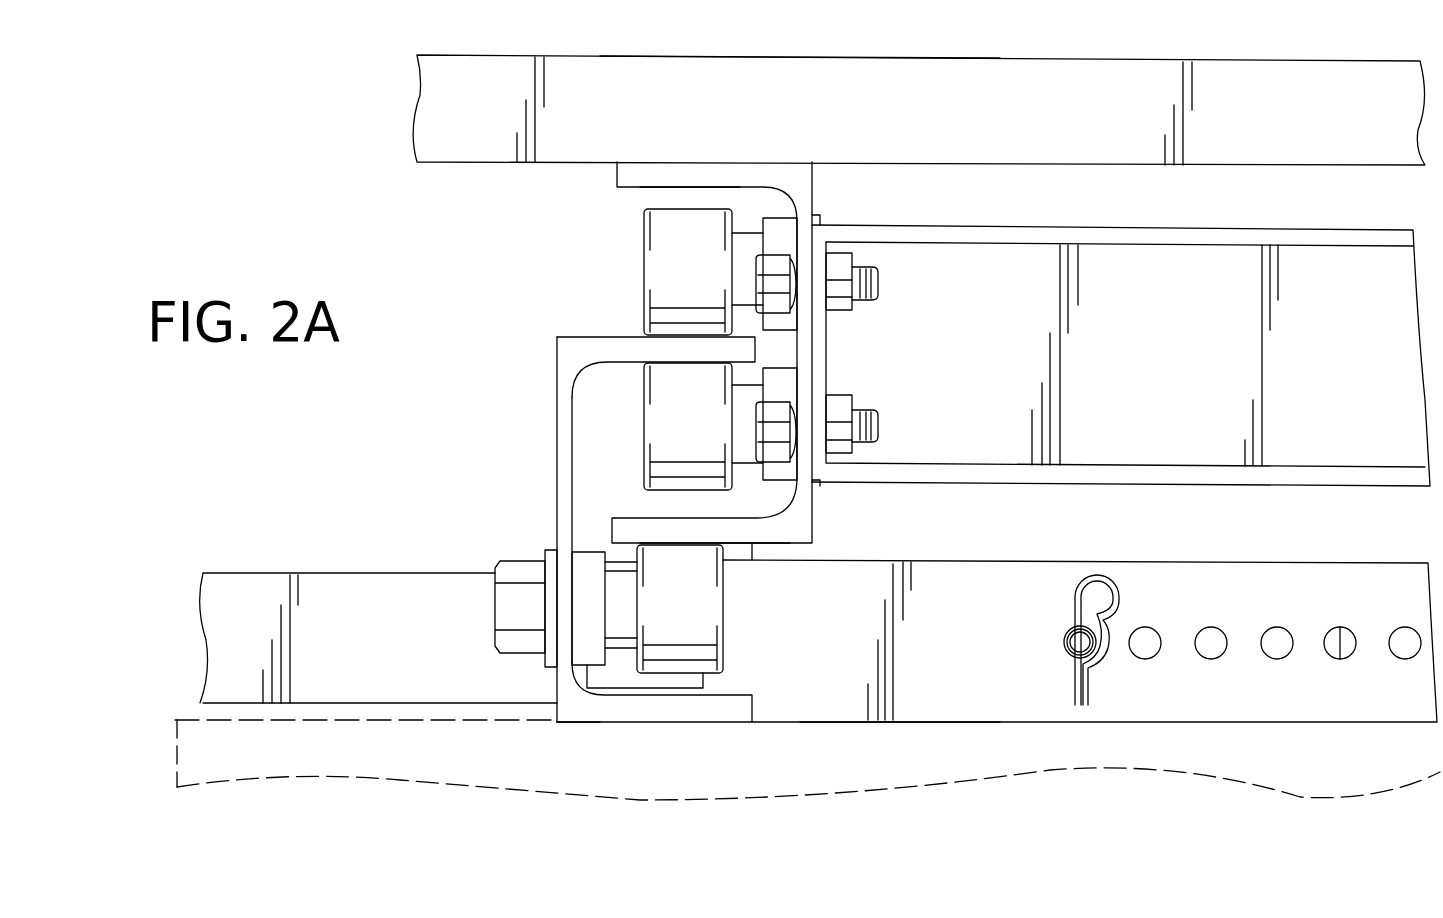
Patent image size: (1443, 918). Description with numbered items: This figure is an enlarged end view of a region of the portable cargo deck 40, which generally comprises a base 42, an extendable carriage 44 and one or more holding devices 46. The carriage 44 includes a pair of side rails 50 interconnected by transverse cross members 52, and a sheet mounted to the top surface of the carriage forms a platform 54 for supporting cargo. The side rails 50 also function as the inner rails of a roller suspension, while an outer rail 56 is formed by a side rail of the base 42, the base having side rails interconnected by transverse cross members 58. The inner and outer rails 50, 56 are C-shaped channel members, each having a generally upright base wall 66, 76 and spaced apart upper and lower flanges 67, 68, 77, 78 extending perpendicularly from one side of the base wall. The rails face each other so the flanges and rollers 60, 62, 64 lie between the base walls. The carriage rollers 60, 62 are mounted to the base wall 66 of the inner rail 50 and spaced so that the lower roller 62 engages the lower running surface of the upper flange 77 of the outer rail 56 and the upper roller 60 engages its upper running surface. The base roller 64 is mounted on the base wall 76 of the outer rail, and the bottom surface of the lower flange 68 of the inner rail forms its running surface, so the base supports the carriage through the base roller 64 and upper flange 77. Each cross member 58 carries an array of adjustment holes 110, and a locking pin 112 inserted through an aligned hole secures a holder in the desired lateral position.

The portable cargo deck 40 is at (912, 56).
The base 42 is at (1010, 722).
The extendable carriage 44 is at (1327, 283).
The holding device 46 is at (334, 573).
The side rail 50 is at (795, 170).
The transverse cross member 52 is at (1228, 233).
The platform 54 is at (638, 56).
The outer rail 56 is at (570, 712).
The transverse cross member 58 is at (912, 722).
The upper roller 60 is at (644, 247).
The lower roller 62 is at (644, 409).
The base roller 64 is at (727, 622).
The base wall 66 is at (805, 355).
The upper flange 67 is at (697, 162).
The lower flange 68 is at (772, 546).
The base wall 76 is at (564, 470).
The upper flange 77 is at (597, 336).
The lower flange 78 is at (658, 722).
The adjustment holes 110 is at (1208, 660).
The locking pin 112 is at (1088, 660).